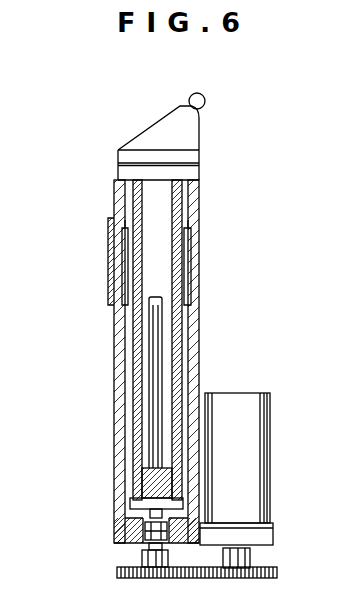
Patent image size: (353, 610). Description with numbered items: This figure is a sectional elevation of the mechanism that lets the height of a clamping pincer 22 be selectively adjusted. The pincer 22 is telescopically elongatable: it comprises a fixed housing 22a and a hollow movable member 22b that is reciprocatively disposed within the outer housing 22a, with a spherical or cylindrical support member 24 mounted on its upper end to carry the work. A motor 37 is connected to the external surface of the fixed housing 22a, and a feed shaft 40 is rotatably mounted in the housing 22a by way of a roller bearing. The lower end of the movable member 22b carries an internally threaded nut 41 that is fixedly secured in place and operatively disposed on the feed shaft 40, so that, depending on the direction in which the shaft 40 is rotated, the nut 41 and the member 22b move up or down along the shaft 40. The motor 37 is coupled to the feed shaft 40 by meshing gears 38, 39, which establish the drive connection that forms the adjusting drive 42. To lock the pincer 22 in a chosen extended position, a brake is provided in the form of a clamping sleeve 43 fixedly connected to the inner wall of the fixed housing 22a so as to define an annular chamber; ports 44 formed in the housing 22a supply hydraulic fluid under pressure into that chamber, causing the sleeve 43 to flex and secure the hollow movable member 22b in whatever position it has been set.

The pincer 22 is at (150, 324).
The fixed housing 22a is at (114, 355).
The hollow movable member 22b is at (133, 398).
The support member 24 is at (208, 97).
The motor 37 is at (253, 458).
The gear 38 is at (255, 560).
The gear 39 is at (125, 567).
The feed shaft 40 is at (162, 340).
The internally threaded nut 41 is at (130, 482).
The drive unit 42 is at (275, 452).
The clamping sleeve 43 is at (108, 260).
The ports 44 is at (104, 233).